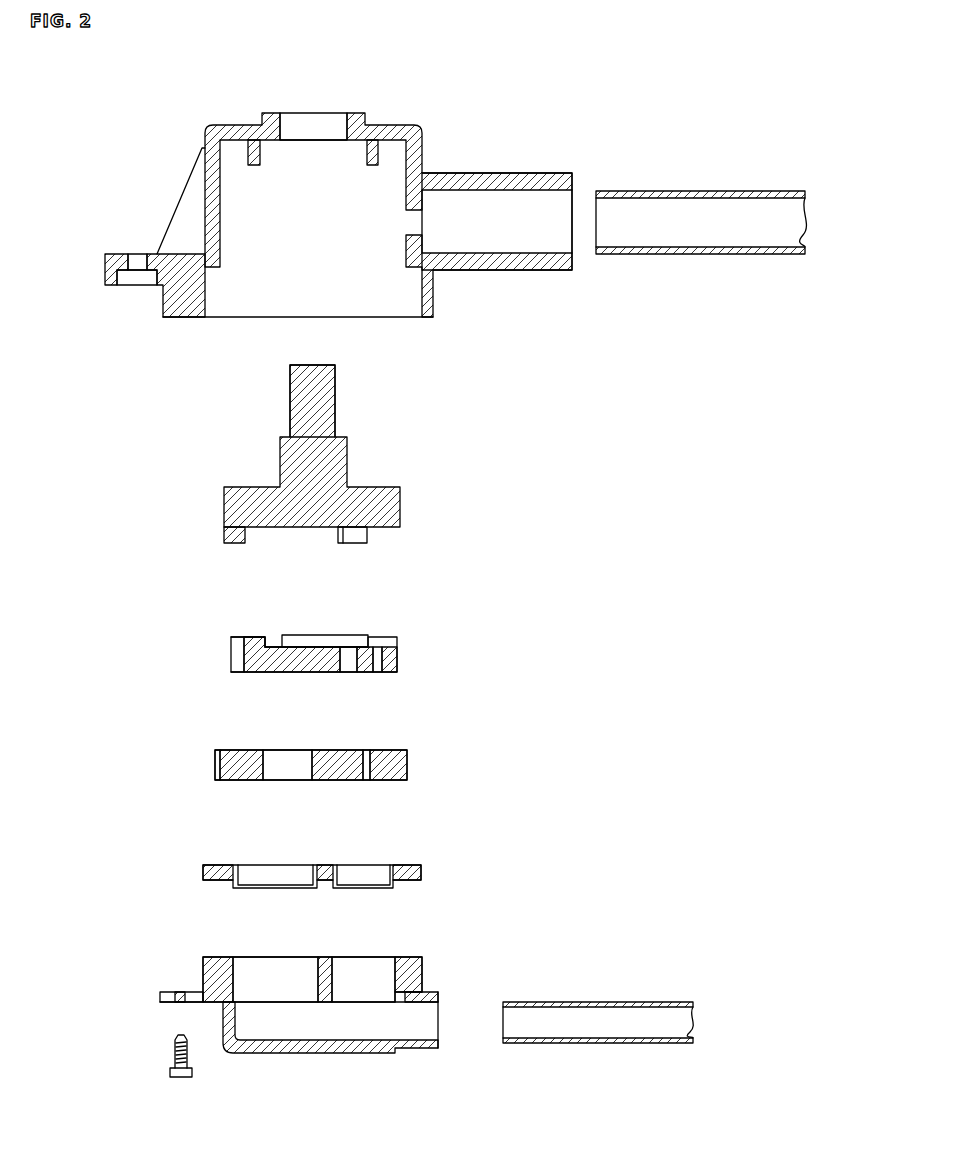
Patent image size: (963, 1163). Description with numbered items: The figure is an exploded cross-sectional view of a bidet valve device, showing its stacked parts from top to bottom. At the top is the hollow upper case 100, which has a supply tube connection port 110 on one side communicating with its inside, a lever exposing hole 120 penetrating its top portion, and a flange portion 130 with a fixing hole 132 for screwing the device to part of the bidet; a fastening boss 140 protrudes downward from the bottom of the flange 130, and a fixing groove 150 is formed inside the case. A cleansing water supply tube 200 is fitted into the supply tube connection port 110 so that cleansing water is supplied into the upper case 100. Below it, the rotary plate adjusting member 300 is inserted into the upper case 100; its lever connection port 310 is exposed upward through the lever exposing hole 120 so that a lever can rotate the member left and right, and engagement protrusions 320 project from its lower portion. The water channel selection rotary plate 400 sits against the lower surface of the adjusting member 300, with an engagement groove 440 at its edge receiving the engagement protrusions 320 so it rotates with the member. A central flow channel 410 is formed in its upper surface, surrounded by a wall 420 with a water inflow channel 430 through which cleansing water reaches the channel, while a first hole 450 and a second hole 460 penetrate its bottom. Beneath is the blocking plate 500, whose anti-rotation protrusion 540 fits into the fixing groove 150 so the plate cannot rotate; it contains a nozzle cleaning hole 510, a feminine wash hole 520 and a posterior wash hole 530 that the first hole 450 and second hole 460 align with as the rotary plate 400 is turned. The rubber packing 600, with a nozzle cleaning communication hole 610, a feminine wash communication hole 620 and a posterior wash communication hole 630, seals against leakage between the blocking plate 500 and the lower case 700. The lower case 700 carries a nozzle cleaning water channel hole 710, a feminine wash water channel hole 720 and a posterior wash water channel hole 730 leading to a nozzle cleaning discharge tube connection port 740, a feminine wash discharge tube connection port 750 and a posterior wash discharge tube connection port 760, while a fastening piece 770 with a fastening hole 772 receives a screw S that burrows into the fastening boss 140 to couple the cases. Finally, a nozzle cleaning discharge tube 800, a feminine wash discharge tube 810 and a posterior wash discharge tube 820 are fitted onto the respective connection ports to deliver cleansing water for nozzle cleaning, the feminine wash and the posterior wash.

The upper case 100 is at (215, 180).
The supply tube connection port 110 is at (510, 195).
The lever exposing hole 120 is at (318, 125).
The flange portion 130 is at (110, 281).
The fixing hole 132 is at (140, 262).
The fastening boss 140 is at (168, 316).
The fixing groove 150 is at (218, 238).
The cleansing water supply tube 200 is at (682, 195).
The rotary plate adjusting member 300 is at (306, 457).
The lever connection port 310 is at (337, 383).
The engagement protrusion 320 is at (224, 540).
The water channel selection rotary plate 400 is at (306, 647).
The central flow channel 410 is at (340, 647).
The wall 420 is at (265, 637).
The water inflow channel 430 is at (257, 647).
The engagement groove 440 is at (230, 657).
The first hole 450 is at (382, 666).
The second hole 460 is at (350, 666).
The blocking plate 500 is at (285, 768).
The nozzle cleaning hole 510 is at (366, 779).
The feminine wash hole 520 is at (212, 778).
The posterior wash hole 530 is at (283, 778).
The anti-rotation protrusion 540 is at (220, 765).
The packing 600 is at (306, 856).
The nozzle cleaning communication hole 610 is at (372, 868).
The feminine wash communication hole 620 is at (211, 861).
The posterior wash communication hole 630 is at (250, 868).
The lower case 700 is at (338, 1006).
The nozzle cleaning water channel hole 710 is at (375, 960).
The feminine wash water channel hole 720 is at (212, 952).
The posterior wash water channel hole 730 is at (255, 960).
The nozzle cleaning discharge tube connection port 740 is at (409, 1051).
The feminine wash discharge tube connection port 750 is at (409, 1051).
The posterior wash discharge tube connection port 760 is at (432, 1032).
The fastening piece 770 is at (160, 997).
The fastening hole 772 is at (183, 993).
The screw S is at (172, 1050).
The nozzle cleaning discharge tube 800 is at (598, 993).
The feminine wash discharge tube 810 is at (598, 993).
The posterior wash discharge tube 820 is at (612, 1000).